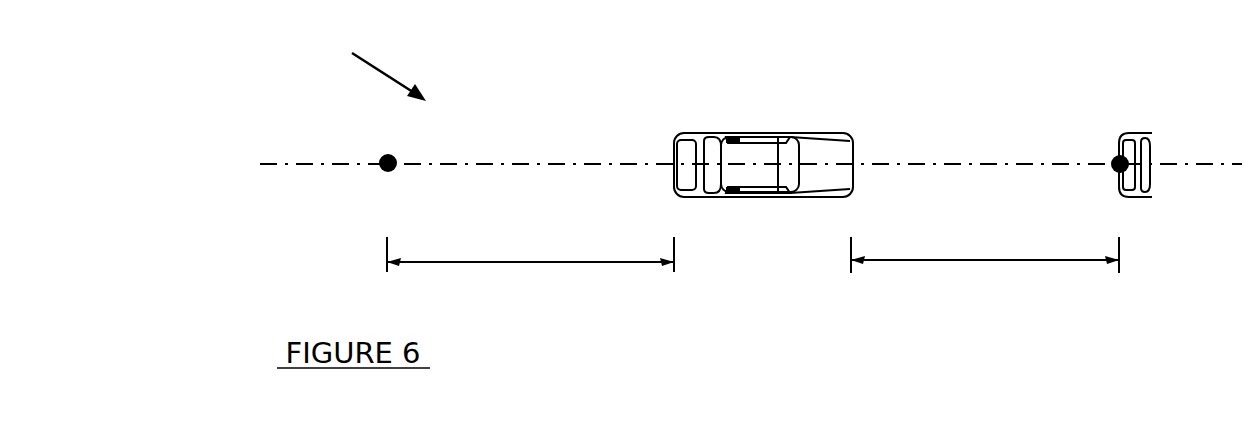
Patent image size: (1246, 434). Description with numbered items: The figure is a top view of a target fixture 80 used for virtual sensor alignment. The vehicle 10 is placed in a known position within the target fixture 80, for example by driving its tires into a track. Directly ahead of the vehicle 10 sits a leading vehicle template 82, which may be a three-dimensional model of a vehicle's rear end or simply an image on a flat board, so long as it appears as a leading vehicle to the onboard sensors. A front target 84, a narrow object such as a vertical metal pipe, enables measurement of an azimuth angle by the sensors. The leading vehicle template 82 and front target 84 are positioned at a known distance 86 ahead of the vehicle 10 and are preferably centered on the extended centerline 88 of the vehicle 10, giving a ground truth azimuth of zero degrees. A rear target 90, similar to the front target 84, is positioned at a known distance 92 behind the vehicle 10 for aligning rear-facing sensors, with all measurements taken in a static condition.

The vehicle 10 is at (713, 133).
The target fixture 80 is at (377, 64).
The leading vehicle template 82 is at (1137, 132).
The front target 84 is at (1112, 159).
The known distance 86 is at (985, 253).
The extended centerline 88 is at (310, 167).
The rear target 90 is at (386, 173).
The known distance 92 is at (530, 253).